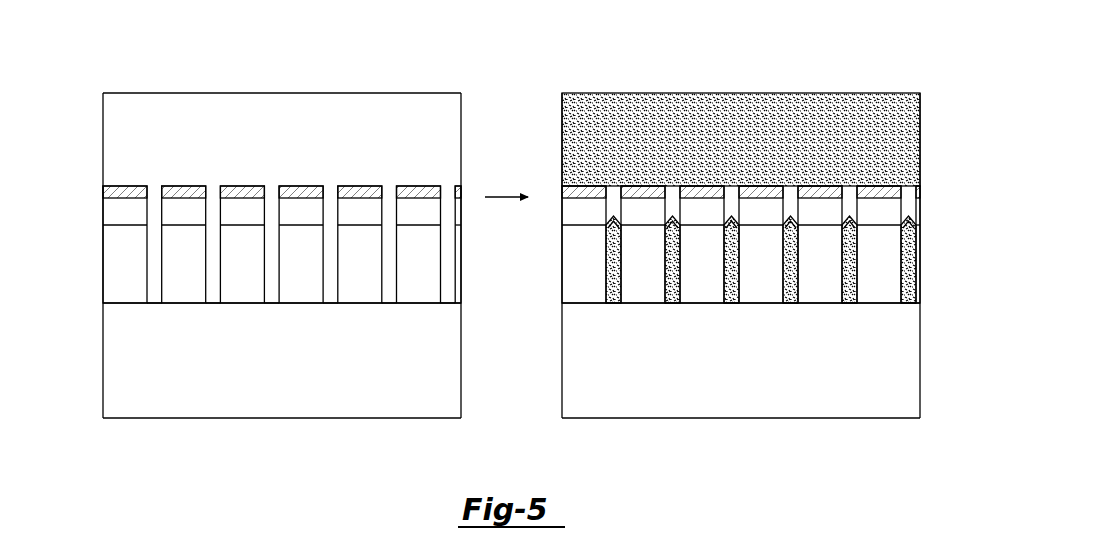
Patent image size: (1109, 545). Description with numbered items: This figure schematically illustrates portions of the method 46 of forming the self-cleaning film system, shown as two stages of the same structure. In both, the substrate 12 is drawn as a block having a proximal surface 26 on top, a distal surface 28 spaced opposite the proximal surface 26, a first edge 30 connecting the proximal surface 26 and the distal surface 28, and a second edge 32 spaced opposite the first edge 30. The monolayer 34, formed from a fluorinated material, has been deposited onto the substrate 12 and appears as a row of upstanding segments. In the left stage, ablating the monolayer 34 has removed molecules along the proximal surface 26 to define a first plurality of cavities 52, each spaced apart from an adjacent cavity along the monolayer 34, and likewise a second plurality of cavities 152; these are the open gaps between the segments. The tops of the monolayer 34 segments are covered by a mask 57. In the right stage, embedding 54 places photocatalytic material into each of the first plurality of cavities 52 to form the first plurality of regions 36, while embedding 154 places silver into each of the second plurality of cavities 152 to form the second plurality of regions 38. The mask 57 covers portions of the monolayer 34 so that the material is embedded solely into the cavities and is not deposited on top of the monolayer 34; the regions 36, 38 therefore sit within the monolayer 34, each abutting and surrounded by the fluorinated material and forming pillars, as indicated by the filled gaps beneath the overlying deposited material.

The method 46 is at (191, 46).
The substrate 12 is at (122, 377).
The proximal surface 26 is at (198, 304).
The distal surface 28 is at (384, 418).
The first edge 30 is at (103, 400).
The second edge 32 is at (462, 341).
The monolayer 34 is at (113, 253).
The first plurality of regions 36 is at (761, 259).
The second plurality of regions 38 is at (782, 273).
The first plurality of cavities 52 is at (282, 157).
The second plurality of cavities 152 is at (273, 183).
The embedding 54 is at (750, 99).
The embedding 154 is at (831, 45).
The mask 57 is at (368, 186).